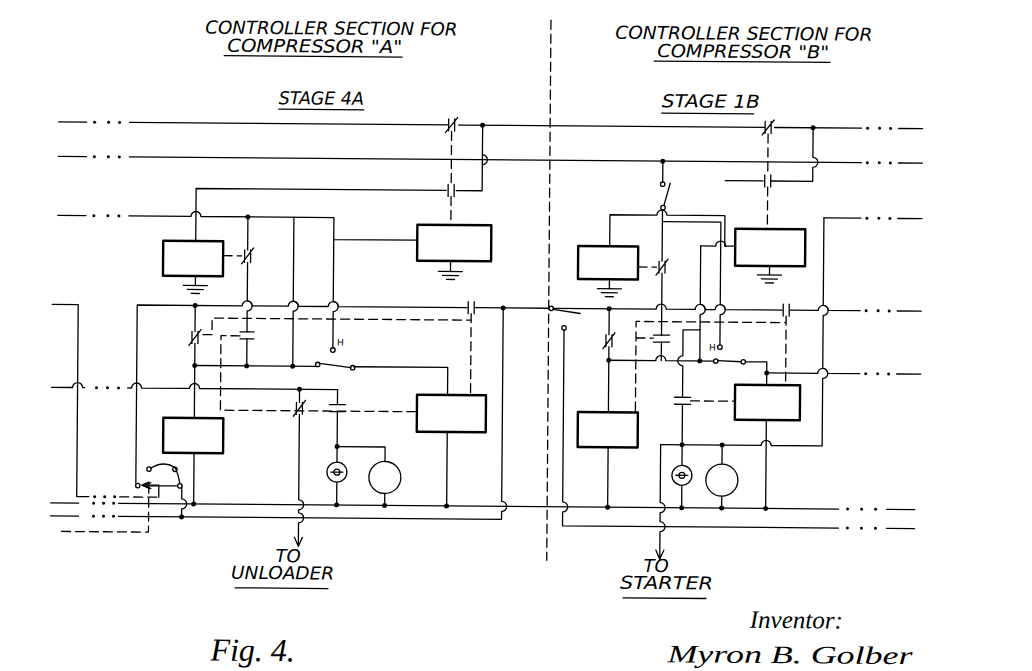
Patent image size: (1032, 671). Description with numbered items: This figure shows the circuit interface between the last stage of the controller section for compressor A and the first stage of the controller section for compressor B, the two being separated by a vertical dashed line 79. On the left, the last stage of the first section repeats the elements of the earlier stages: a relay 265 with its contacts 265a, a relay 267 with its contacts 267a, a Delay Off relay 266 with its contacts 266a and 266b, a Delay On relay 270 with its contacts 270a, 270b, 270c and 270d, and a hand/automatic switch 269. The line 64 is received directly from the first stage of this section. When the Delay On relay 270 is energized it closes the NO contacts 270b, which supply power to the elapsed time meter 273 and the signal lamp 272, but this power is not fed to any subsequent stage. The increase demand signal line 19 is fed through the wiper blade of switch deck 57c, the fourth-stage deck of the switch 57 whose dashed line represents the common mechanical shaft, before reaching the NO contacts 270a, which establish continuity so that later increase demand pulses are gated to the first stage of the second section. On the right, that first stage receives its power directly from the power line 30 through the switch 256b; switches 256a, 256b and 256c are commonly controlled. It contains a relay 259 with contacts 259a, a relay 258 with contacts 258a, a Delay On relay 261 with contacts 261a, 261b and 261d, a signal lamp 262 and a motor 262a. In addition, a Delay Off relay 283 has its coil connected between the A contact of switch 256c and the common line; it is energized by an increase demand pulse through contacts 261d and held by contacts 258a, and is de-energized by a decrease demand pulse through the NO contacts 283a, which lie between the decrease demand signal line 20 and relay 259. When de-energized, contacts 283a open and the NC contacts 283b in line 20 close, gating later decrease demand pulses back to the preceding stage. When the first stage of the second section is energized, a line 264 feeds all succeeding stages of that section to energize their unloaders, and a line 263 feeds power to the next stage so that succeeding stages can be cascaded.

The decrease demand signal line 20 is at (175, 124).
The power line 30 is at (170, 159).
The vertical dashed line 79 is at (548, 48).
The increase demand signal line 19 is at (137, 303).
The line 64 is at (152, 388).
The line 263 is at (845, 215).
The line 264 is at (845, 371).
The Delay Off relay 266 is at (473, 233).
The contacts of Delay Off relay 266a is at (446, 190).
The contacts of Delay Off relay 266b is at (452, 118).
The relay 267 is at (162, 250).
The contacts of relay 267a is at (250, 254).
The Delay On relay 270 is at (467, 432).
The NO contacts 270a is at (474, 303).
The NO contacts 270b is at (346, 406).
The contacts of Delay On relay 270c is at (298, 418).
The contacts of Delay On relay 270d is at (191, 340).
The relay 265 is at (225, 432).
The contacts of relay 265a is at (250, 341).
The switch 269 is at (349, 363).
The switch 57 is at (103, 544).
The switch deck 57c is at (196, 492).
The signal lamp 272 is at (346, 476).
The elapsed time meter 273 is at (398, 462).
The Delay Off relay 283 is at (748, 227).
The NO contacts 283a is at (772, 186).
The NC contacts 283b is at (770, 118).
The switch 256a is at (563, 300).
The switch 256b is at (649, 199).
The switch 256c is at (743, 352).
The relay 259 is at (590, 245).
The contacts of relay 259a is at (668, 262).
The Delay On relay 261 is at (800, 418).
The contacts of Delay On relay 261a is at (780, 304).
The contacts of Delay On relay 261b is at (691, 400).
The contacts of Delay On relay 261d is at (591, 357).
The relay 258 is at (592, 447).
The contacts of relay 258a is at (664, 355).
The signal lamp 262 is at (687, 465).
The motor 262a is at (739, 480).